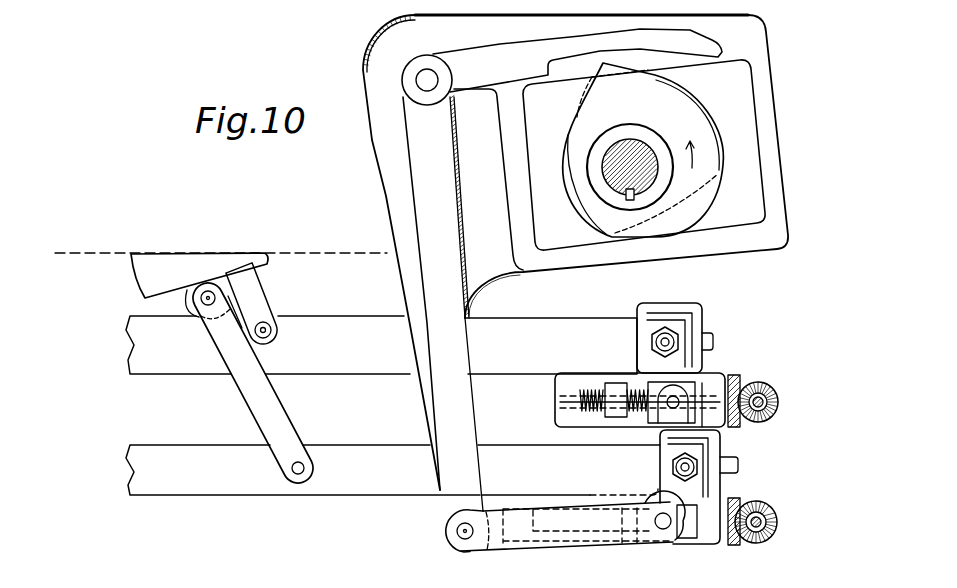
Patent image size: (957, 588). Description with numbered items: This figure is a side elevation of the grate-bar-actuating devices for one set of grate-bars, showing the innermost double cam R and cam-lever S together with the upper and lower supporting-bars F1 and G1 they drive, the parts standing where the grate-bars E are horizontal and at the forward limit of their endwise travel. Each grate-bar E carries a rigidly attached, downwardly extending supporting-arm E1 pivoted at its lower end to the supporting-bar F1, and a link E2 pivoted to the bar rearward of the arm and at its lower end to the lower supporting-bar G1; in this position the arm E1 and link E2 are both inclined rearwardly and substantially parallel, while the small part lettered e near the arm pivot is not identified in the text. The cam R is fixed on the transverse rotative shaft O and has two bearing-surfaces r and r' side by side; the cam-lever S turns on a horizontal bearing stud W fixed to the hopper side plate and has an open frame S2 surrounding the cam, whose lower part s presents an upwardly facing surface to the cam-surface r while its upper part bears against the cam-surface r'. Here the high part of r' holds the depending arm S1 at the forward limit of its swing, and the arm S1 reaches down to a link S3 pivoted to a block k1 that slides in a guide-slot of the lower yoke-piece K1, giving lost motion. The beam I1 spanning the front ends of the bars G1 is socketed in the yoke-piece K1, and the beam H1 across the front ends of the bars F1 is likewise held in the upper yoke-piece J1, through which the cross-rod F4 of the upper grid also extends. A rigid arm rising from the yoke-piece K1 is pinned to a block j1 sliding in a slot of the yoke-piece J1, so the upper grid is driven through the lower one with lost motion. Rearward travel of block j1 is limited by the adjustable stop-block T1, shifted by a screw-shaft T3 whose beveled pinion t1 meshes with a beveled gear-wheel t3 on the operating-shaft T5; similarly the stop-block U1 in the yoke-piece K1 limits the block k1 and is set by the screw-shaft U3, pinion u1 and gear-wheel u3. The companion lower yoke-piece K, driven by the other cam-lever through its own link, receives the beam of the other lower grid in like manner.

The cam-lever S is at (575, 252).
The depending arm S1 is at (584, 285).
The open frame S2 is at (738, 44).
The link S3 is at (490, 547).
The lower part of frame s is at (564, 239).
The double cam R is at (643, 150).
The cam-surface r is at (727, 187).
The cam-surface r' is at (697, 125).
The rotative shaft O is at (616, 141).
The grate-bar E is at (221, 261).
The pawl nose e is at (184, 303).
The supporting-arm E1 is at (262, 300).
The link E2 is at (278, 411).
The supporting-bar F1 is at (381, 345).
The cross-rod F4 is at (710, 342).
The supporting-bar G1 is at (393, 470).
The upper yoke-piece J1 is at (605, 380).
The sliding block j1 is at (703, 383).
The beam H1 is at (670, 341).
The stop-block T1 is at (615, 418).
The screw-shaft T3 is at (595, 404).
The operating-shaft T5 is at (778, 405).
The beveled gear-pinion t1 is at (742, 383).
The beveled gear-wheel t3 is at (775, 384).
The lower yoke-piece K is at (671, 411).
The lower yoke-piece K1 is at (713, 540).
The sliding block k1 is at (686, 540).
The beam I1 is at (712, 488).
The stop-block U1 is at (630, 549).
The gear-pinion u1 is at (770, 536).
The beveled gear-wheel u3 is at (772, 511).
The screw-shaft U3 is at (778, 523).
The bearing stud W is at (380, 575).